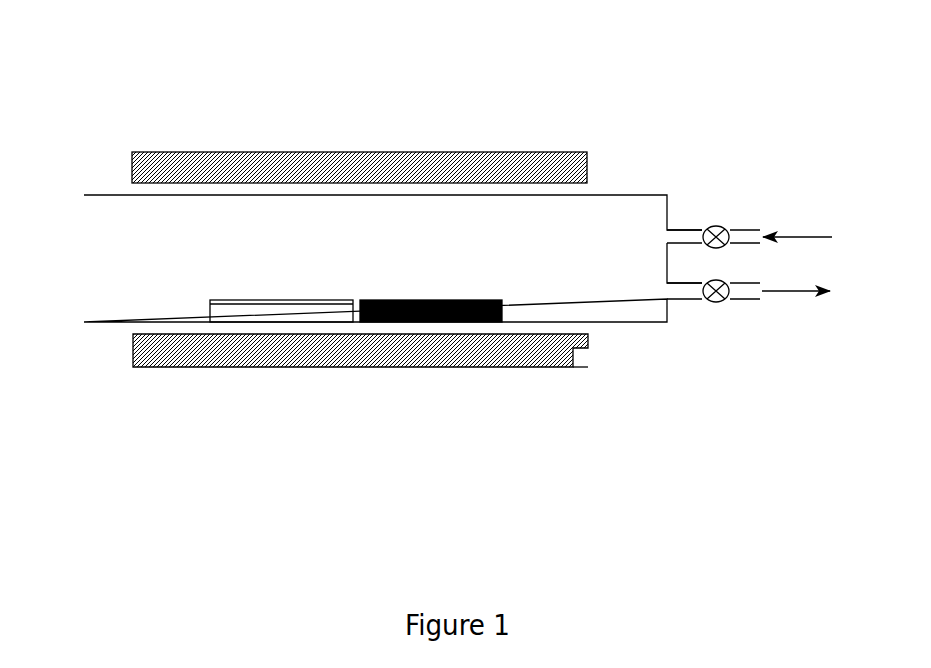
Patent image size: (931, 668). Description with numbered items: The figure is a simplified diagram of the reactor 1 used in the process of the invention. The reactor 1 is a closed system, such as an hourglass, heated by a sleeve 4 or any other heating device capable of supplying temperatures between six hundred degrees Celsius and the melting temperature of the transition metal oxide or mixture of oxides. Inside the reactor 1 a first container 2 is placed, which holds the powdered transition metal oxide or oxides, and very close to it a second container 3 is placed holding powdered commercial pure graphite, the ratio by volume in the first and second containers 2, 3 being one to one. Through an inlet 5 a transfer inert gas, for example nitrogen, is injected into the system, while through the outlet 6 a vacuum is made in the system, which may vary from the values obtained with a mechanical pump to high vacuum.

The reactor 1 is at (310, 225).
The first container 2 is at (243, 312).
The second container 3 is at (428, 323).
The sleeve 4 is at (242, 168).
The inlet 5 is at (685, 213).
The outlet 6 is at (710, 325).